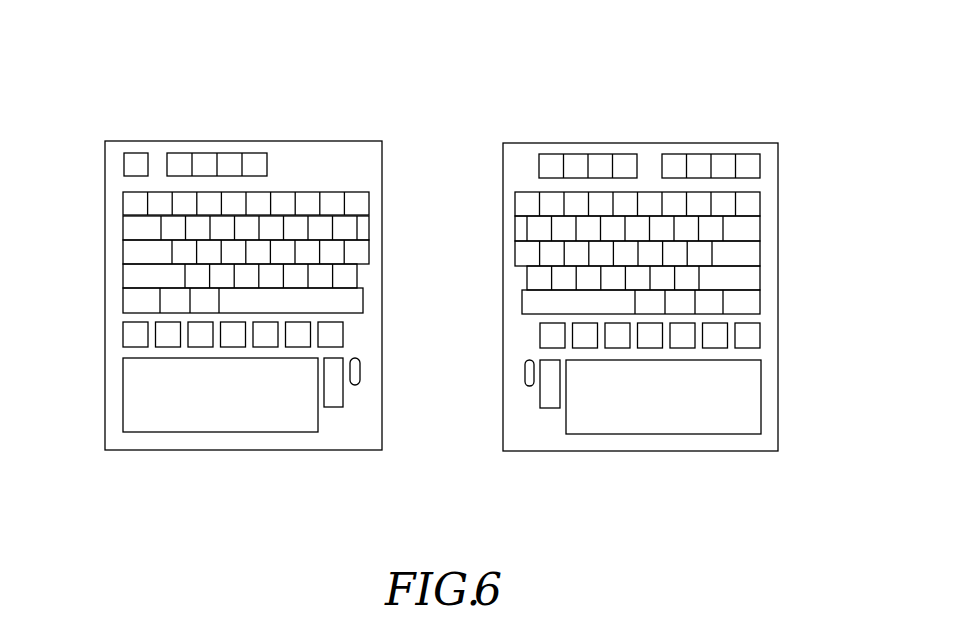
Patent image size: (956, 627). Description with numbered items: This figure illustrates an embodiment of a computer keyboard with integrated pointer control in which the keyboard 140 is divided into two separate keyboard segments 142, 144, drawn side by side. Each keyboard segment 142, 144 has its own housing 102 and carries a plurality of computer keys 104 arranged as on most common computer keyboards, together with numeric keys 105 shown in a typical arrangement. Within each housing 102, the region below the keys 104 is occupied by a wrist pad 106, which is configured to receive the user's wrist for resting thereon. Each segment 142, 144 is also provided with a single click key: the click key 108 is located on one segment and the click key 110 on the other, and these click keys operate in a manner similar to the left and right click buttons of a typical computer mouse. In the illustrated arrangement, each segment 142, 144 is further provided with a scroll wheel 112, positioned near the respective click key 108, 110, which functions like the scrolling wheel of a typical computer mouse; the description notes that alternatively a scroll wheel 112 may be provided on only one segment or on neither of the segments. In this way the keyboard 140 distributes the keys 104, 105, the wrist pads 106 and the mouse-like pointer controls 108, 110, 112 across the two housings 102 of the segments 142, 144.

The housing 102 is at (157, 150).
The computer keys 104 is at (135, 205).
The numeric keys 105 is at (137, 337).
The wrist pad 106 is at (237, 399).
The click key 108 is at (335, 393).
The click key 110 is at (552, 393).
The scroll wheel 112 is at (355, 385).
The keyboard 140 is at (649, 256).
The keyboard segment 142 is at (305, 95).
The keyboard segment 144 is at (535, 118).